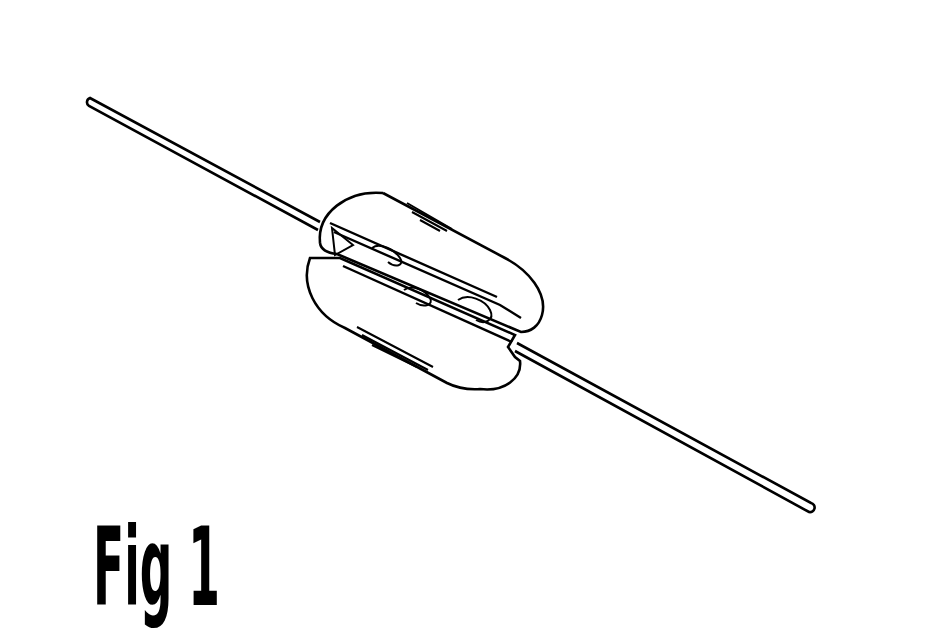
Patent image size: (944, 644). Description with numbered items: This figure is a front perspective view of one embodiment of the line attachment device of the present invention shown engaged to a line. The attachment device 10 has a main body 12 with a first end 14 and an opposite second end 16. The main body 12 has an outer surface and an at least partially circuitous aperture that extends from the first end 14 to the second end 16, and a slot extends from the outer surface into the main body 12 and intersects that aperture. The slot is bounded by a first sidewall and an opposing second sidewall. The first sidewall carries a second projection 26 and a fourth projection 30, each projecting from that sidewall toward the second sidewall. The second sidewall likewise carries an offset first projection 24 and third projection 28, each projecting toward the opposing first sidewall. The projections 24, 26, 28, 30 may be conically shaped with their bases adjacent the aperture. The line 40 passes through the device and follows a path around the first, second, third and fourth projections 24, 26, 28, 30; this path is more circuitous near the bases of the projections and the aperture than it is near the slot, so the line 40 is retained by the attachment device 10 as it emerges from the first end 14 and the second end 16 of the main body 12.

The attachment device 10 is at (587, 297).
The main body 12 is at (475, 239).
The first end 14 is at (500, 382).
The second end 16 is at (348, 202).
The first projection 24 is at (356, 255).
The second projection 26 is at (400, 263).
The third projection 28 is at (408, 300).
The fourth projection 30 is at (472, 315).
The line 40 is at (212, 173).